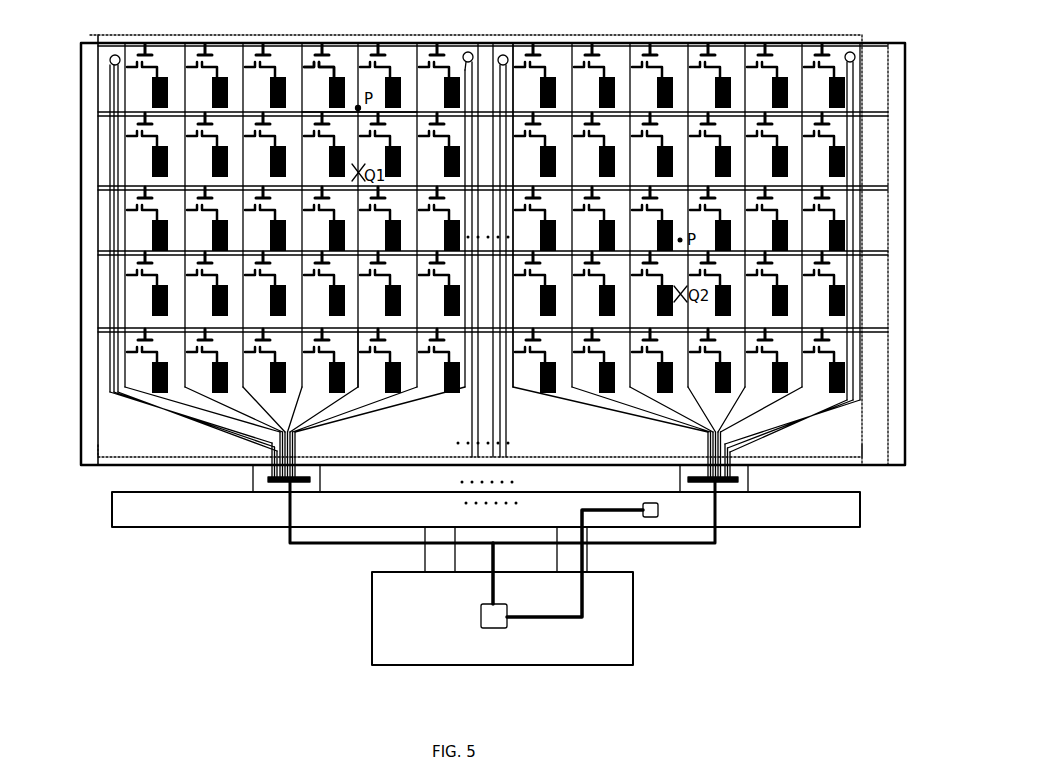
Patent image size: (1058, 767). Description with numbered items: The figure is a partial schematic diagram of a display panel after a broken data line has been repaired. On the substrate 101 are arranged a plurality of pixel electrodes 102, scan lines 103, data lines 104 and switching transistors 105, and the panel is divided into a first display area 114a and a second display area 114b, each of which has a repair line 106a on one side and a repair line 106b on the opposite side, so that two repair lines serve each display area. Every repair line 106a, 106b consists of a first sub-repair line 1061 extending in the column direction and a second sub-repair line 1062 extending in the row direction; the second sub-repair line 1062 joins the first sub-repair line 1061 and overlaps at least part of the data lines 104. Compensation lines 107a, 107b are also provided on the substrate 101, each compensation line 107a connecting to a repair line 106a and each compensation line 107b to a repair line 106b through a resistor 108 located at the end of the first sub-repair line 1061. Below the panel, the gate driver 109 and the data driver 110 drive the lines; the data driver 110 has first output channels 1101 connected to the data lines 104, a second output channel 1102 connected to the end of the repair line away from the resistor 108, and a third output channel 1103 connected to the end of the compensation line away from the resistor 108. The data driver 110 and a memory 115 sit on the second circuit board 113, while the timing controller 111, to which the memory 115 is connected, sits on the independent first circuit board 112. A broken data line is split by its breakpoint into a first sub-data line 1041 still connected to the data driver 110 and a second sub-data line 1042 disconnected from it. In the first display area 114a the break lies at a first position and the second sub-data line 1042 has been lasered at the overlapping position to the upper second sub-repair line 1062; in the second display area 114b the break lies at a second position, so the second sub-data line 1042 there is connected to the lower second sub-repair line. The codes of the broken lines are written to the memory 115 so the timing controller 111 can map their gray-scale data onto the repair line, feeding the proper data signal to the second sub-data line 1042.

The substrate 101 is at (865, 48).
The pixel electrode 102 is at (555, 93).
The scan line 103 is at (332, 80).
The data line 104 is at (415, 82).
The first sub-data line 1041 is at (368, 375).
The second sub-data line 1042 is at (358, 108).
The switching transistor 105 is at (265, 50).
The repair line 106a is at (118, 68).
The repair line 106b is at (463, 68).
The first sub-repair line 1061 is at (118, 372).
The second sub-repair line 1062 is at (458, 72).
The compensation line 107a is at (98, 62).
The compensation line 107b is at (507, 58).
The resistor 108 is at (113, 55).
The gate driver 109 is at (82, 242).
The data driver 110 is at (258, 488).
The first output channel 1101 is at (308, 467).
The second output channel 1102 is at (300, 445).
The third output channel 1103 is at (277, 452).
The timing controller 111 is at (492, 630).
The first circuit board 112 is at (614, 657).
The second circuit board 113 is at (222, 530).
The first display area 114a is at (125, 442).
The second display area 114b is at (845, 443).
The memory 115 is at (652, 519).